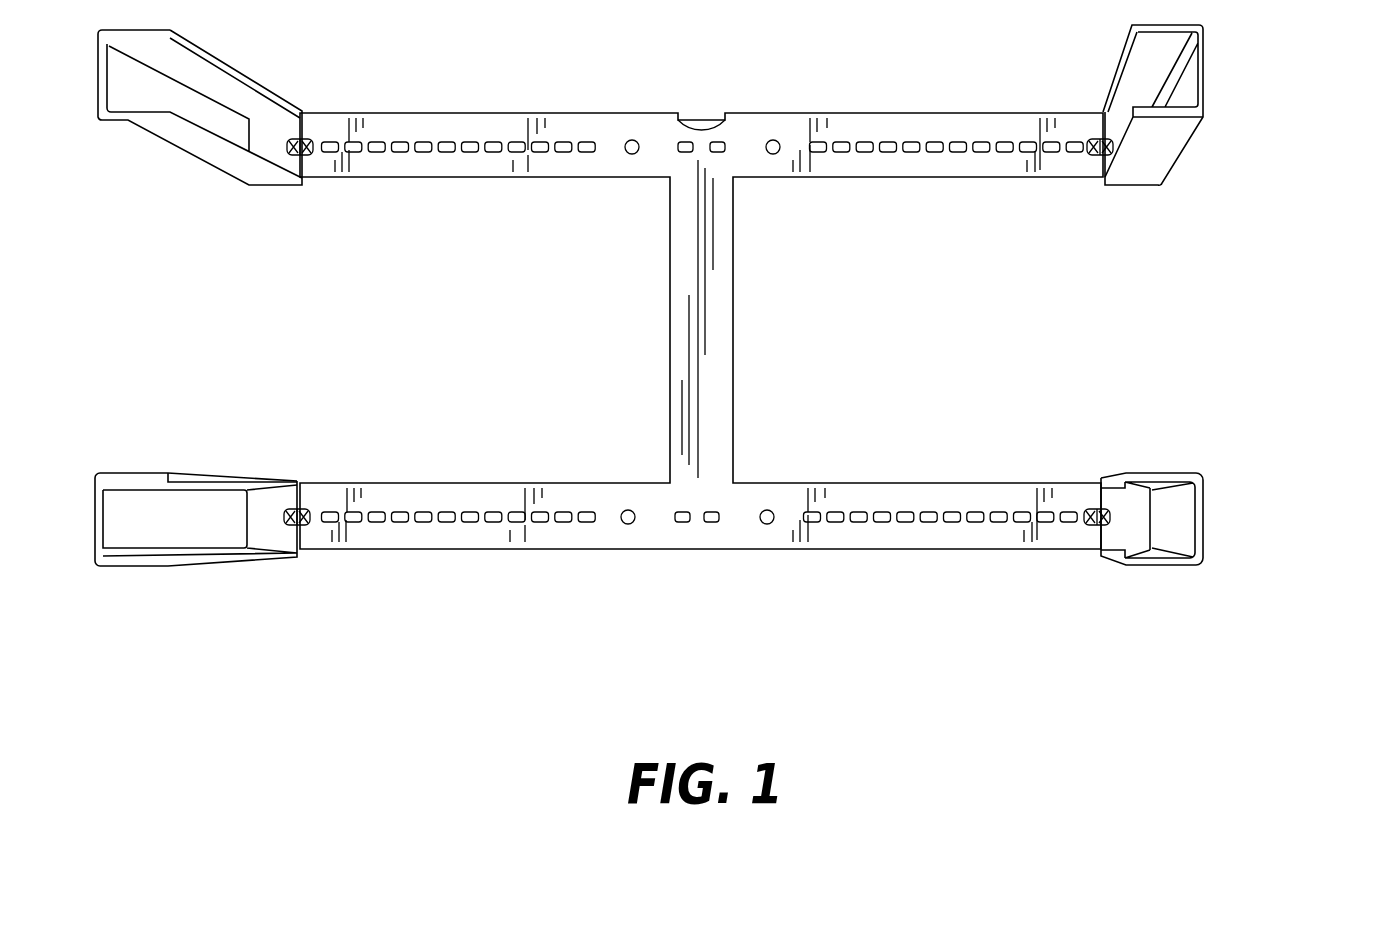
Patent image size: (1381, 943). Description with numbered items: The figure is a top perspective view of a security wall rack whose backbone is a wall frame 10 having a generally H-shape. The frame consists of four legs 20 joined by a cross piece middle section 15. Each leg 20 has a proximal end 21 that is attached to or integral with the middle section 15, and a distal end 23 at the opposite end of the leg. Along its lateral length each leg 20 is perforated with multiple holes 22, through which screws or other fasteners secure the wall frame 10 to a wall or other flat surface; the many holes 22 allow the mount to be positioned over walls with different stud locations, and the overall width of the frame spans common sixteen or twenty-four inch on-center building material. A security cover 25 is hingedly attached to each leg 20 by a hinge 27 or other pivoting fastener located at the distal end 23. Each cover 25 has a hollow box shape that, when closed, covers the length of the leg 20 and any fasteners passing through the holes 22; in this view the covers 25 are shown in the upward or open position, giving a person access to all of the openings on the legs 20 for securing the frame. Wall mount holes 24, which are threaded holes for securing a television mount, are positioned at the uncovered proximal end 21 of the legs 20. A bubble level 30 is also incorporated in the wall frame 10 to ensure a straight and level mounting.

The wall frame 10 is at (1303, 196).
The middle section 15 is at (705, 424).
The legs 20 is at (431, 161).
The proximal end 21 is at (607, 128).
The holes 22 is at (470, 138).
The distal end 23 is at (322, 126).
The wall mount holes 24 is at (631, 156).
The security cover 25 is at (1206, 83).
The hinge 27 is at (305, 157).
The bubble level 30 is at (705, 118).